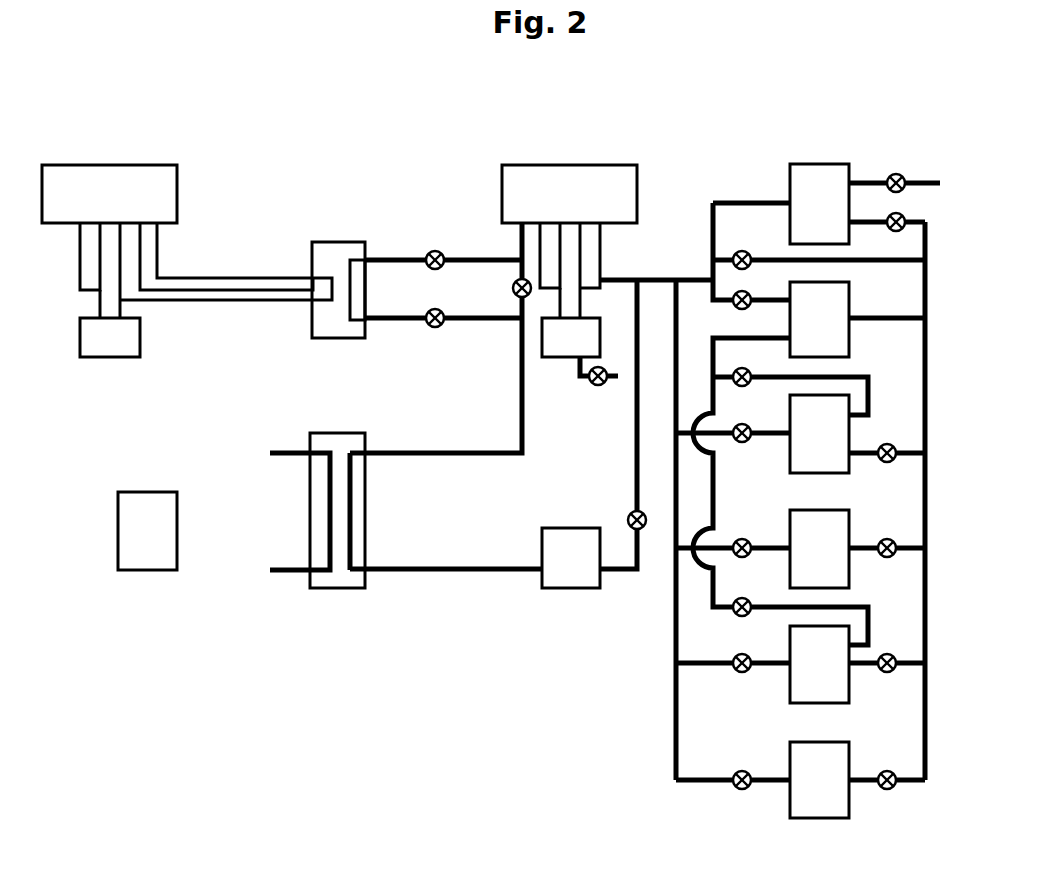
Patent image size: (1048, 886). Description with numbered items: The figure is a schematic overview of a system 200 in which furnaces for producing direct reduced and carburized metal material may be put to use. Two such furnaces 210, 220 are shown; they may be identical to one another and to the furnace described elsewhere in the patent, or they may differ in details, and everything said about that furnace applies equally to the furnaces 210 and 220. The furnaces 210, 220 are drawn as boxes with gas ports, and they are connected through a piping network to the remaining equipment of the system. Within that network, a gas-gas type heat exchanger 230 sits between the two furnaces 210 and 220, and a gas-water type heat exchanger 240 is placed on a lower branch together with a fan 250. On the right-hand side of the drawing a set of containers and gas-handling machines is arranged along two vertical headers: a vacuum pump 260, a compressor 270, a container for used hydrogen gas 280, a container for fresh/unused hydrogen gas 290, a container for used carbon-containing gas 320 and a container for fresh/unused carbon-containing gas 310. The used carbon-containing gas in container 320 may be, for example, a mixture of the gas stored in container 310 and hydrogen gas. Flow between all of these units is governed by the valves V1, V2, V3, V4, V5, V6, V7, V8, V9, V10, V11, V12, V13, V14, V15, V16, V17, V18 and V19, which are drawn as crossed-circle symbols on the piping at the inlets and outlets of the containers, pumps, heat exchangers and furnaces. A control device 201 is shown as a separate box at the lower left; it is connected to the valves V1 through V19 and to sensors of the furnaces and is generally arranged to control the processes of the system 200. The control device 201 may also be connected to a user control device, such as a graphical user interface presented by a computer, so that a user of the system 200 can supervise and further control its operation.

The system 200 is at (303, 124).
The control device 201 is at (147, 531).
The furnace 210 is at (187, 261).
The furnace 220 is at (569, 261).
The gas-gas type heat exchanger 230 is at (338, 290).
The gas-water type heat exchanger 240 is at (337, 510).
The fan 250 is at (571, 558).
The vacuum pump 260 is at (819, 204).
The compressor 270 is at (819, 319).
The container for used hydrogen gas 280 is at (819, 434).
The container for fresh/unused hydrogen gas 290 is at (819, 549).
The container for fresh/unused carbon-containing gas 310 is at (819, 780).
The container for used carbon-containing gas 320 is at (819, 664).
The valve V1 is at (740, 556).
The valve V2 is at (897, 557).
The valve V3 is at (745, 443).
The valve V4 is at (897, 457).
The valve V5 is at (751, 373).
The valve V6 is at (751, 300).
The valve V7 is at (751, 260).
The valve V8 is at (888, 216).
The valve V9 is at (895, 173).
The valve V10 is at (628, 520).
The valve V11 is at (592, 387).
The valve V12 is at (513, 294).
The valve V13 is at (433, 251).
The valve V14 is at (432, 328).
The valve V15 is at (743, 790).
The valve V16 is at (890, 789).
The valve V17 is at (743, 673).
The valve V18 is at (890, 672).
The valve V19 is at (733, 612).